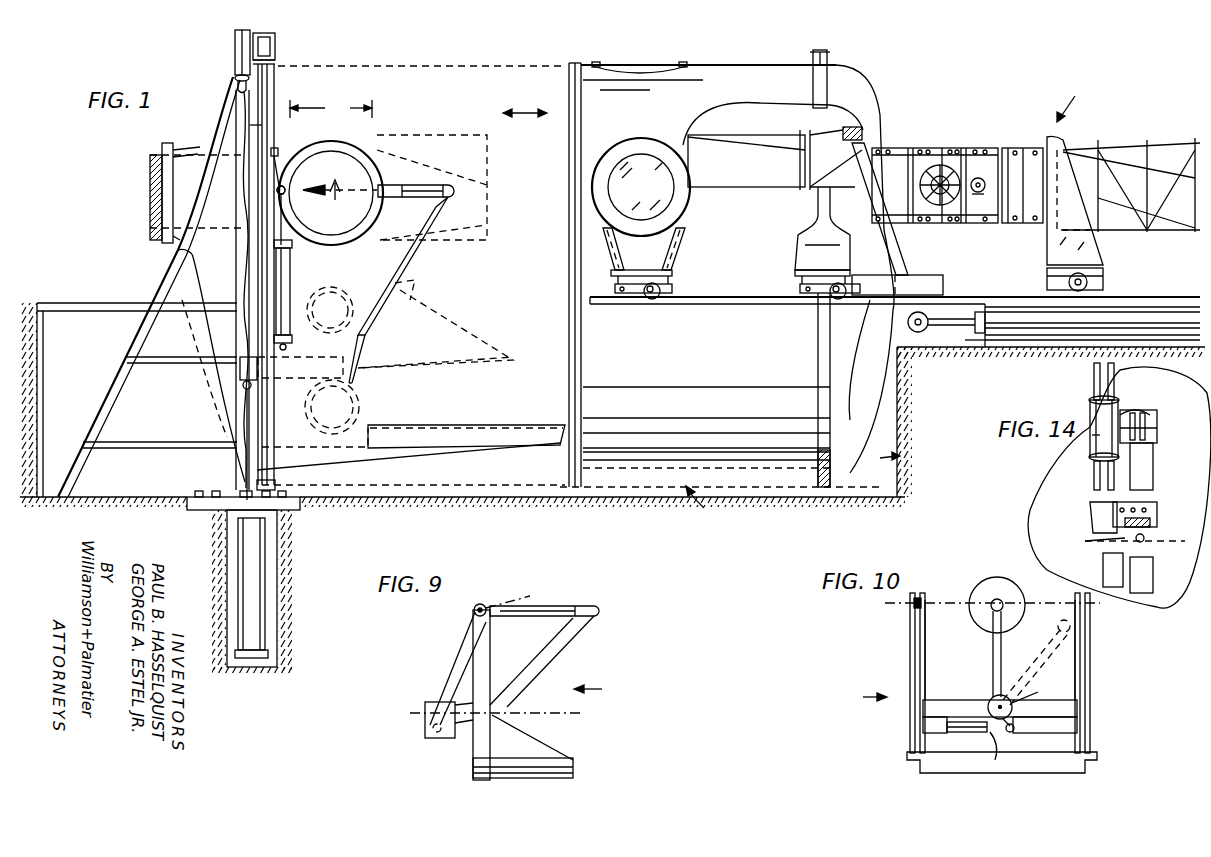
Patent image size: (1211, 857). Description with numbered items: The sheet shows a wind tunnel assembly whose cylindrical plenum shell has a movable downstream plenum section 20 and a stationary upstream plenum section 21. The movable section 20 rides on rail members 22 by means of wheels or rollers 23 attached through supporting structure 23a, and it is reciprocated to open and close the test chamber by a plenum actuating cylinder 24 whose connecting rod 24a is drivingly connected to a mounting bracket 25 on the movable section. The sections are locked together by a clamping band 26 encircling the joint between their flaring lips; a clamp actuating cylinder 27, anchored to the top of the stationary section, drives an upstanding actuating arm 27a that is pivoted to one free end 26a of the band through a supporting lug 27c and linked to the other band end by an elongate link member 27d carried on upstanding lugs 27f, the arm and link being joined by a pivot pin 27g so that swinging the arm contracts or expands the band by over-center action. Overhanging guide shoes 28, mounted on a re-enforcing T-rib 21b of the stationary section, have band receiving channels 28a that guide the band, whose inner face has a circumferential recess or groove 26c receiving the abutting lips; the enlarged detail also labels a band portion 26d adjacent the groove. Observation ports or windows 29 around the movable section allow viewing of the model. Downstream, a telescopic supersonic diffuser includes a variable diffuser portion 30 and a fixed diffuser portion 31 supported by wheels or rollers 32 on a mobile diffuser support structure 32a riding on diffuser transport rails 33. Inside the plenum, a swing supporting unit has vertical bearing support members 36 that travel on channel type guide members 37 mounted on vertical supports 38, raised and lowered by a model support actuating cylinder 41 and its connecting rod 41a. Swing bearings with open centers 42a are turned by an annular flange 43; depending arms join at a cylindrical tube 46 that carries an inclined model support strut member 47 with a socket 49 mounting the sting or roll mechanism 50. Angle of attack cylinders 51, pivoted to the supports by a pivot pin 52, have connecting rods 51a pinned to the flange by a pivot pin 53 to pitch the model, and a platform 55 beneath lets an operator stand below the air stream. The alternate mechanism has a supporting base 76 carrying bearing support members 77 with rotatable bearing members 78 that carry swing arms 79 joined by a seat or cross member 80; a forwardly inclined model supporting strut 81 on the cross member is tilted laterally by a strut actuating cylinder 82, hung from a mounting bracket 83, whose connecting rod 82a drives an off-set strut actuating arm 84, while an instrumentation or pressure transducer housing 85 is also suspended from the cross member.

In FIG. 1, the movable downstream plenum section 20 is at (748, 66).
In FIG. 1, the stationary upstream plenum section 21 is at (210, 122).
In FIG. 14, the stationary upstream plenum section 21 is at (1040, 487).
In FIG. 14, the re-enforcing T-rib 21b is at (1098, 510).
In FIG. 1, the rail members 22 is at (765, 306).
In FIG. 1, the wheels or rollers 23 is at (650, 300).
In FIG. 1, the supporting structure 23a is at (683, 262).
In FIG. 1, the plenum actuating cylinder 24 is at (1030, 340).
In FIG. 1, the connecting rod 24a is at (950, 328).
In FIG. 1, the mounting bracket 25 is at (948, 285).
In FIG. 1, the clamping band 26 is at (276, 45).
In FIG. 14, the clamping band 26 is at (1155, 535).
In FIG. 14, the free end of clamping band 26a is at (1153, 460).
In FIG. 14, the circumferential recess or groove 26c is at (1145, 542).
In FIG. 14, the base strip 26d is at (1135, 543).
In FIG. 1, the clamp actuating cylinder 27 is at (235, 50).
In FIG. 14, the clamp actuating cylinder 27 is at (1093, 450).
In FIG. 14, the actuating arm 27a is at (1093, 392).
In FIG. 14, the supporting lug 27c is at (1150, 413).
In FIG. 14, the elongate link member 27d is at (1157, 418).
In FIG. 14, the upstanding lugs 27f is at (1157, 435).
In FIG. 14, the pivot pin 27g is at (1092, 432).
In FIG. 14, the guide shoes 28 is at (1150, 507).
In FIG. 14, the band receiving channels 28a is at (1155, 507).
In FIG. 1, the observation ports or windows 29 is at (652, 66).
In FIG. 1, the variable diffuser portion 30 is at (952, 145).
In FIG. 1, the fixed diffuser portion 31 is at (1165, 143).
In FIG. 1, the wheels or rollers 32 is at (1100, 276).
In FIG. 1, the mobile diffuser support structure 32a is at (1098, 250).
In FIG. 1, the diffuser transport rails 33 is at (1158, 296).
In FIG. 1, the bearing support members 36 is at (362, 352).
In FIG. 1, the channel type rail or guide members 37 is at (262, 125).
In FIG. 1, the vertical supports 38 is at (257, 468).
In FIG. 1, the model support actuating cylinder 41 is at (232, 560).
In FIG. 1, the connecting rod 41a is at (252, 433).
In FIG. 1, the open centers 42a is at (357, 152).
In FIG. 1, the annular flange 43 is at (362, 150).
In FIG. 1, the cylindrical tube 46 is at (368, 320).
In FIG. 1, the model support strut member 47 is at (440, 206).
In FIG. 1, the socket 49 is at (445, 184).
In FIG. 1, the sting or roll mechanism 50 is at (395, 183).
In FIG. 9, the sting or roll mechanism 50 is at (562, 605).
In FIG. 1, the angle of attack cylinders 51 is at (287, 312).
In FIG. 1, the cylinder connecting rod 51a is at (283, 200).
In FIG. 1, the pivot pin 52 is at (291, 340).
In FIG. 1, the pivot pin 53 is at (286, 190).
In FIG. 1, the platform 55 is at (515, 422).
In FIG. 9, the supporting base 76 is at (525, 775).
In FIG. 10, the supporting base 76 is at (935, 775).
In FIG. 9, the bearing support members 77 is at (485, 645).
In FIG. 10, the bearing support members 77 is at (910, 622).
In FIG. 9, the rotatable bearing members 78 is at (474, 609).
In FIG. 10, the rotatable bearing members 78 is at (921, 602).
In FIG. 9, the swing arms 79 is at (455, 658).
In FIG. 10, the swing arms 79 is at (926, 663).
In FIG. 10, the seat or cross member 80 is at (962, 700).
In FIG. 9, the model supporting strut 81 is at (545, 662).
In FIG. 10, the model supporting strut 81 is at (1002, 643).
In FIG. 10, the strut actuating cylinder 82 is at (970, 732).
In FIG. 10, the connecting rod 82a is at (983, 752).
In FIG. 10, the mounting bracket 83 is at (930, 722).
In FIG. 10, the off-set strut actuating arm 84 is at (1012, 732).
In FIG. 10, the instrumentation or pressure transducer housing 85 is at (1068, 727).